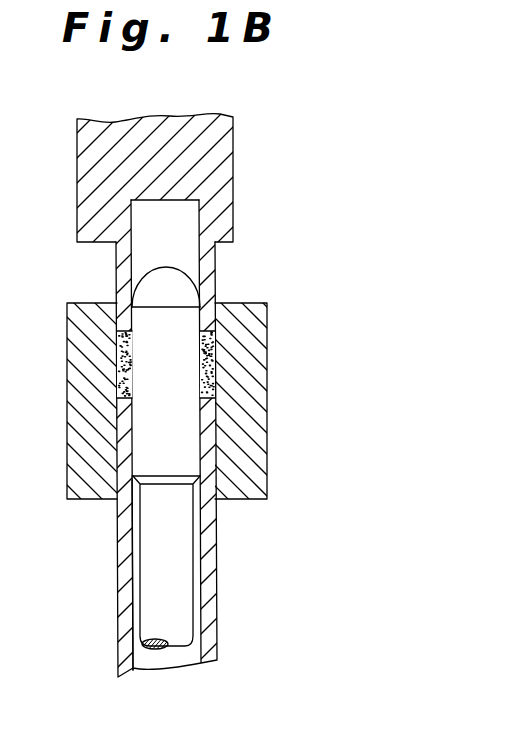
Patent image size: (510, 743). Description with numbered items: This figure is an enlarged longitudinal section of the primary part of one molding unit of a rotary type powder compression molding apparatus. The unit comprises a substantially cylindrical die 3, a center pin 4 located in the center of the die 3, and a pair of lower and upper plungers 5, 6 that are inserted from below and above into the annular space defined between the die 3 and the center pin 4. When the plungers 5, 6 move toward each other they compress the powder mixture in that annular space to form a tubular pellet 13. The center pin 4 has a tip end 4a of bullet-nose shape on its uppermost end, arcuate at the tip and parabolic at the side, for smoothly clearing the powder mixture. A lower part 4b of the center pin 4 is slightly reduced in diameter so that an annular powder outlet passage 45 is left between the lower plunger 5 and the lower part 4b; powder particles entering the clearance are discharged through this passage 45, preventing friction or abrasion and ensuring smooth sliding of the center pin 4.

The die 3 is at (260, 423).
The center pin 4 is at (153, 352).
The tip end 4a is at (173, 290).
The lower part 4b is at (180, 570).
The lower plunger 5 is at (125, 563).
The upper plunger 6 is at (212, 154).
The tubular pellet 13 is at (202, 350).
The powder outlet passage 45 is at (136, 592).